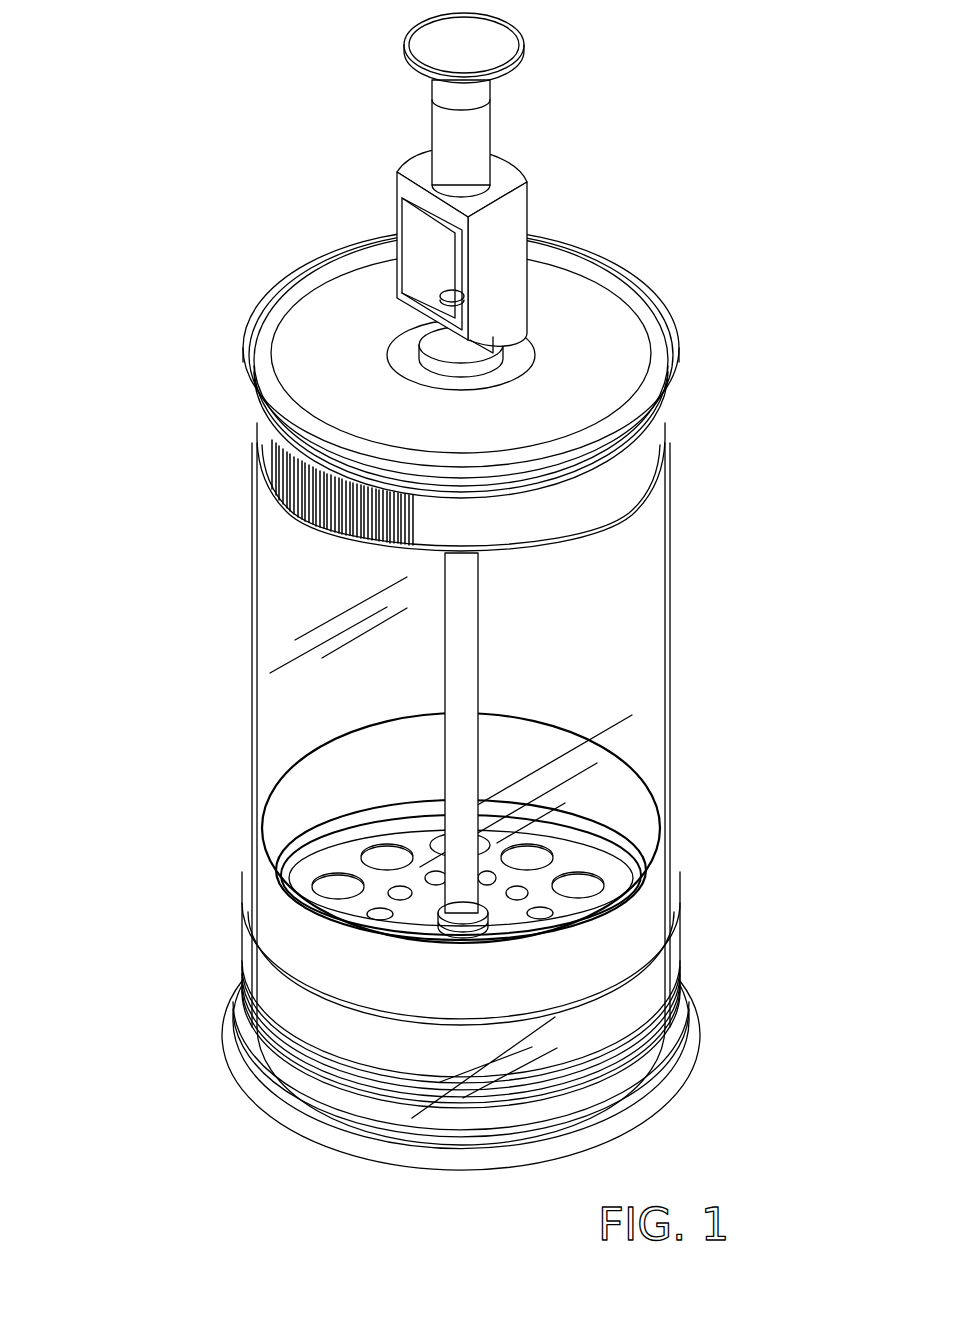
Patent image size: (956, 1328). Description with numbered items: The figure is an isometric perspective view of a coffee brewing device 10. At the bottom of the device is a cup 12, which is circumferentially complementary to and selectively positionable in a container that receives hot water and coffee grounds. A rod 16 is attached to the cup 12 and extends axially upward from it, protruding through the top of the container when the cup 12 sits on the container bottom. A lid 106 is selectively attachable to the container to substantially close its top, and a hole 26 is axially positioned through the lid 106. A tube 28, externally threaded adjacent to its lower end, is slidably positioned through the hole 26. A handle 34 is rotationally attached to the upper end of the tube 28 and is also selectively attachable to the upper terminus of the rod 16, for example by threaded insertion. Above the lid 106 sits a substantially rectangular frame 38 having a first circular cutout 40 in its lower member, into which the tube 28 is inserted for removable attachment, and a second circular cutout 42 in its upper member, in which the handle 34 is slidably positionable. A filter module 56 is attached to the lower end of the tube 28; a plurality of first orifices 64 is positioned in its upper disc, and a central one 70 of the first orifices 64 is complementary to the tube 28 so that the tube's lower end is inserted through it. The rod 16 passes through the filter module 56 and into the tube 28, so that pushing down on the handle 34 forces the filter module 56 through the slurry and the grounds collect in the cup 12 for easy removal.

The coffee brewing device 10 is at (438, 591).
The cup 12 is at (560, 715).
The rod 16 is at (442, 249).
The hole 26 is at (420, 348).
The tube 28 is at (470, 604).
The handle 34 is at (552, 105).
The frame 38 is at (408, 250).
The first circular cutout 40 is at (425, 298).
The second circular cutout 42 is at (498, 190).
The filter module 56 is at (550, 868).
The first orifices 64 is at (423, 922).
The central one of the first orifices 70 is at (510, 922).
The lid 106 is at (618, 337).